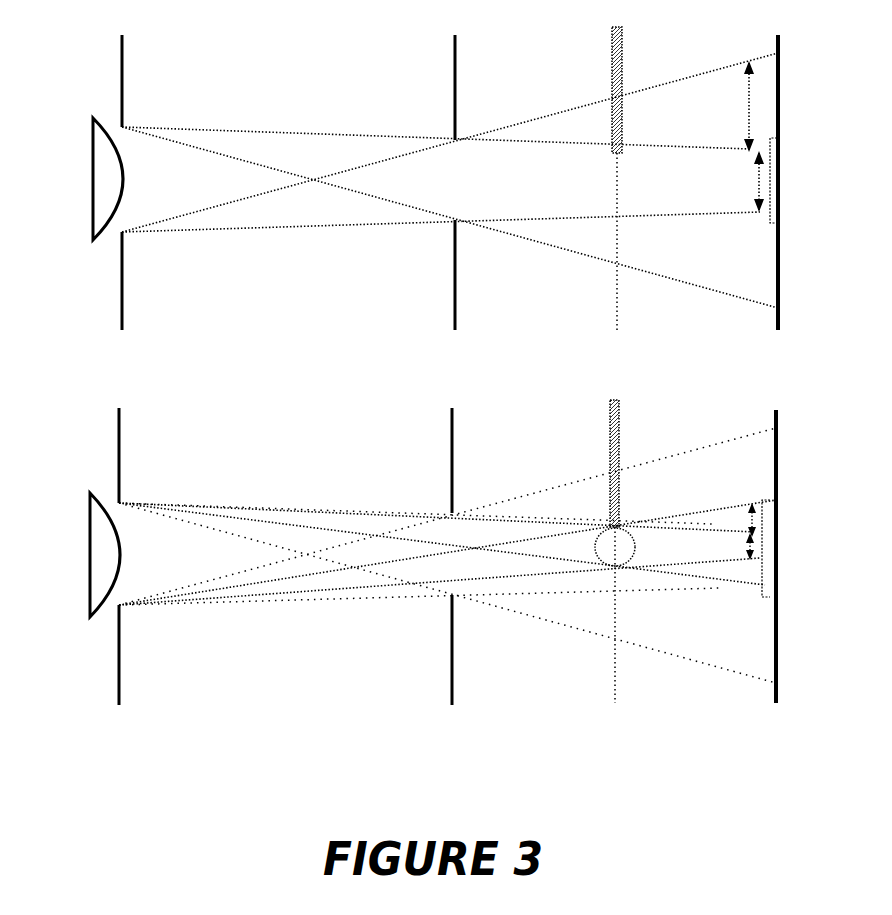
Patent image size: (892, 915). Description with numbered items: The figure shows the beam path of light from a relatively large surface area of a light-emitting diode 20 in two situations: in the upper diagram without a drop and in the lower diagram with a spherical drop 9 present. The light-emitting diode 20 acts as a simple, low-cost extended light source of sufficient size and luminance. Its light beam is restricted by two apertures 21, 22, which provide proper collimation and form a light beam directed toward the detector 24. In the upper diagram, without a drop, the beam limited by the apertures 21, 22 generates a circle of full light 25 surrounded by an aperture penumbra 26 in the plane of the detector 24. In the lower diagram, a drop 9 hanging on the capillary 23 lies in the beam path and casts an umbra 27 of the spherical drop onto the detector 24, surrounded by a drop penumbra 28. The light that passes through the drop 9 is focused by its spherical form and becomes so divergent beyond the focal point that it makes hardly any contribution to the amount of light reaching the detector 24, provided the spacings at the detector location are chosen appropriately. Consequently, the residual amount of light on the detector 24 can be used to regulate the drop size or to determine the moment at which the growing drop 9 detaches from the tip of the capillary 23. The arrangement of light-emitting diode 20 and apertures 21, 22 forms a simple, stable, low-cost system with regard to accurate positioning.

The light-emitting diode 20 is at (86, 367).
The first aperture 21 is at (140, 370).
The second aperture 22 is at (474, 370).
The capillary 23 is at (636, 365).
The detector 24 is at (792, 369).
The circle of full light 25 is at (741, 181).
The aperture penumbra 26 is at (732, 106).
The umbra 27 is at (733, 552).
The drop penumbra 28 is at (743, 548).
The spherical drop 9 is at (615, 547).